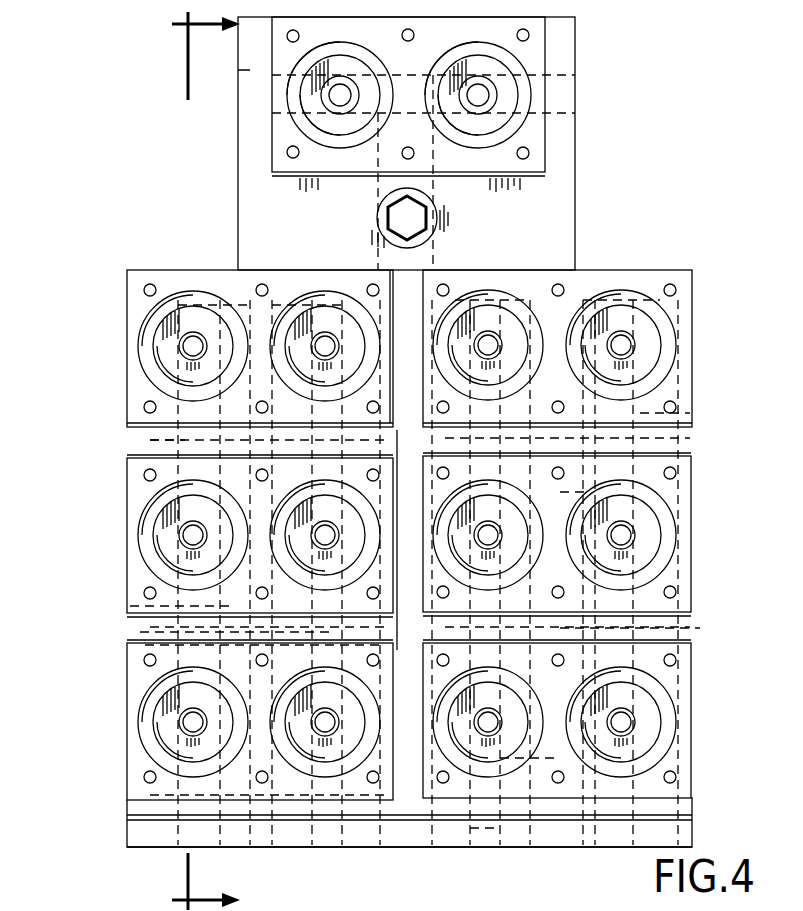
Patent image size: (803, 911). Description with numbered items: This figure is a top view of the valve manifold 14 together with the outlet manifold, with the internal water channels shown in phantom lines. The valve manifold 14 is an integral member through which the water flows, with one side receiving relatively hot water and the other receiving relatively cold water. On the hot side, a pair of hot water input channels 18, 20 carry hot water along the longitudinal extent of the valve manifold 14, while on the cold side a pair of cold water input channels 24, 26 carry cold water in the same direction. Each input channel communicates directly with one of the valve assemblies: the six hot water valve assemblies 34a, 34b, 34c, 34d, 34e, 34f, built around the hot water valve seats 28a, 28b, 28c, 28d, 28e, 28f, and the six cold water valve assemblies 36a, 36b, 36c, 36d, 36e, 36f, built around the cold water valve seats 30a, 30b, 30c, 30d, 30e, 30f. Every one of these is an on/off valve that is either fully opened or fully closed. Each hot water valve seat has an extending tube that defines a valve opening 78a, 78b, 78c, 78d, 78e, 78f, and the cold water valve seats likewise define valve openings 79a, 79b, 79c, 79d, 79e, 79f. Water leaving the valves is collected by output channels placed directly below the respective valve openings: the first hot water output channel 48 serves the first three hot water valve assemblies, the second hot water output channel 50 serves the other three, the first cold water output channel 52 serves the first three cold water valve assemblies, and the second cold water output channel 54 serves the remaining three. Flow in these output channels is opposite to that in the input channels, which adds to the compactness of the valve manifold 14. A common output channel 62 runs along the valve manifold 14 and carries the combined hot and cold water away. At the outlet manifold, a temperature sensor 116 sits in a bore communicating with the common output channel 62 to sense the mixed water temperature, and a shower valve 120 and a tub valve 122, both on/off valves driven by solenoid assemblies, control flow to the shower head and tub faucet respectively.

The valve manifold 14 is at (693, 345).
The hot water input channel 18 is at (130, 606).
The hot water input channel 20 is at (145, 645).
The cold water input channel 24 is at (588, 492).
The cold water input channel 26 is at (700, 625).
The hot water valve seat 28a is at (173, 763).
The hot water valve seat 28b is at (158, 531).
The hot water valve seat 28c is at (158, 333).
The hot water valve seat 28d is at (313, 762).
The hot water valve seat 28e is at (292, 578).
The hot water valve seat 28f is at (348, 286).
The cold water valve seat 30a is at (668, 727).
The cold water valve seat 30b is at (668, 540).
The cold water valve seat 30c is at (653, 318).
The cold water valve seat 30d is at (485, 765).
The cold water valve seat 30e is at (498, 520).
The cold water valve seat 30f is at (472, 305).
The hot water valve assembly 34a is at (188, 792).
The hot water valve assembly 34b is at (134, 495).
The hot water valve assembly 34c is at (172, 288).
The hot water valve assembly 34d is at (275, 678).
The hot water valve assembly 34e is at (278, 492).
The hot water valve assembly 34f is at (337, 290).
The cold water valve assembly 36a is at (682, 762).
The cold water valve assembly 36b is at (680, 505).
The cold water valve assembly 36c is at (621, 288).
The cold water valve assembly 36d is at (460, 792).
The cold water valve assembly 36e is at (526, 479).
The cold water valve assembly 36f is at (516, 290).
The first hot water output channel 48 is at (150, 437).
The second hot water output channel 50 is at (140, 632).
The first cold water output channel 52 is at (693, 413).
The second cold water output channel 54 is at (498, 830).
The common output channel 62 is at (420, 837).
The valve opening 78a is at (185, 735).
The valve opening 78b is at (185, 543).
The valve opening 78c is at (185, 350).
The valve opening 78d is at (329, 737).
The valve opening 78e is at (325, 529).
The valve opening 78f is at (323, 338).
The valve opening 79a is at (637, 722).
The valve opening 79b is at (634, 540).
The valve opening 79c is at (632, 343).
The valve opening 79d is at (496, 735).
The valve opening 79e is at (490, 548).
The valve opening 79f is at (484, 332).
The temperature sensor 116 is at (440, 220).
The shower valve 120 is at (295, 118).
The tub valve 122 is at (530, 96).